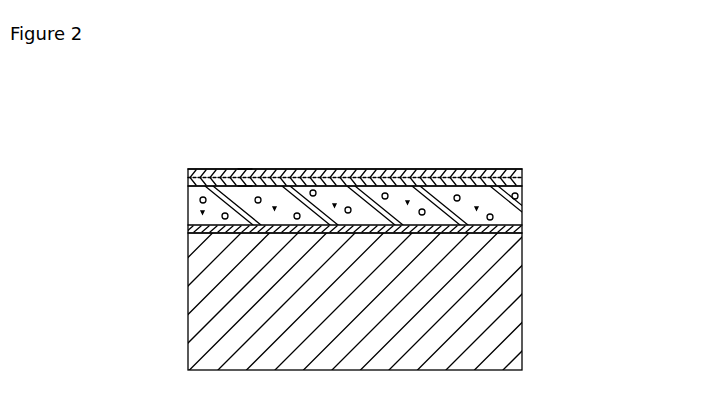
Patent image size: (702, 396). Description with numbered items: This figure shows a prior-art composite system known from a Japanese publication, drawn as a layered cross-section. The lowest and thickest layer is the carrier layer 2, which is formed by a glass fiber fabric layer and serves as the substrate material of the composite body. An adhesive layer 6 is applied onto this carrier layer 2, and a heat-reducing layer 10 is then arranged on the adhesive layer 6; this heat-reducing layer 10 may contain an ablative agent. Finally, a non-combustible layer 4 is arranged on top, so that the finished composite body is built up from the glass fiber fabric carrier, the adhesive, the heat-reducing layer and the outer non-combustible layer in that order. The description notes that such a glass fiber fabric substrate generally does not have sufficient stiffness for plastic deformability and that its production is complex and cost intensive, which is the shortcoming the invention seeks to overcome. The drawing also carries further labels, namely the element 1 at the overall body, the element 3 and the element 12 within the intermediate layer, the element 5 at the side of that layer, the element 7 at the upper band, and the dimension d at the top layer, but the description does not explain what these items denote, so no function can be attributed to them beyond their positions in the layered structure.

The coated article 1 is at (358, 247).
The carrier layer 2 is at (513, 317).
The flake pigment particle 3 is at (439, 188).
The non-combustible layer 4 is at (293, 168).
The coating layer 5 is at (374, 184).
The adhesive layer 6 is at (396, 222).
The protective top layer 7 is at (545, 163).
The heat-reducing layer 10 is at (334, 205).
The inclined flake 12 is at (488, 186).
The thickness of protective layer d is at (247, 168).